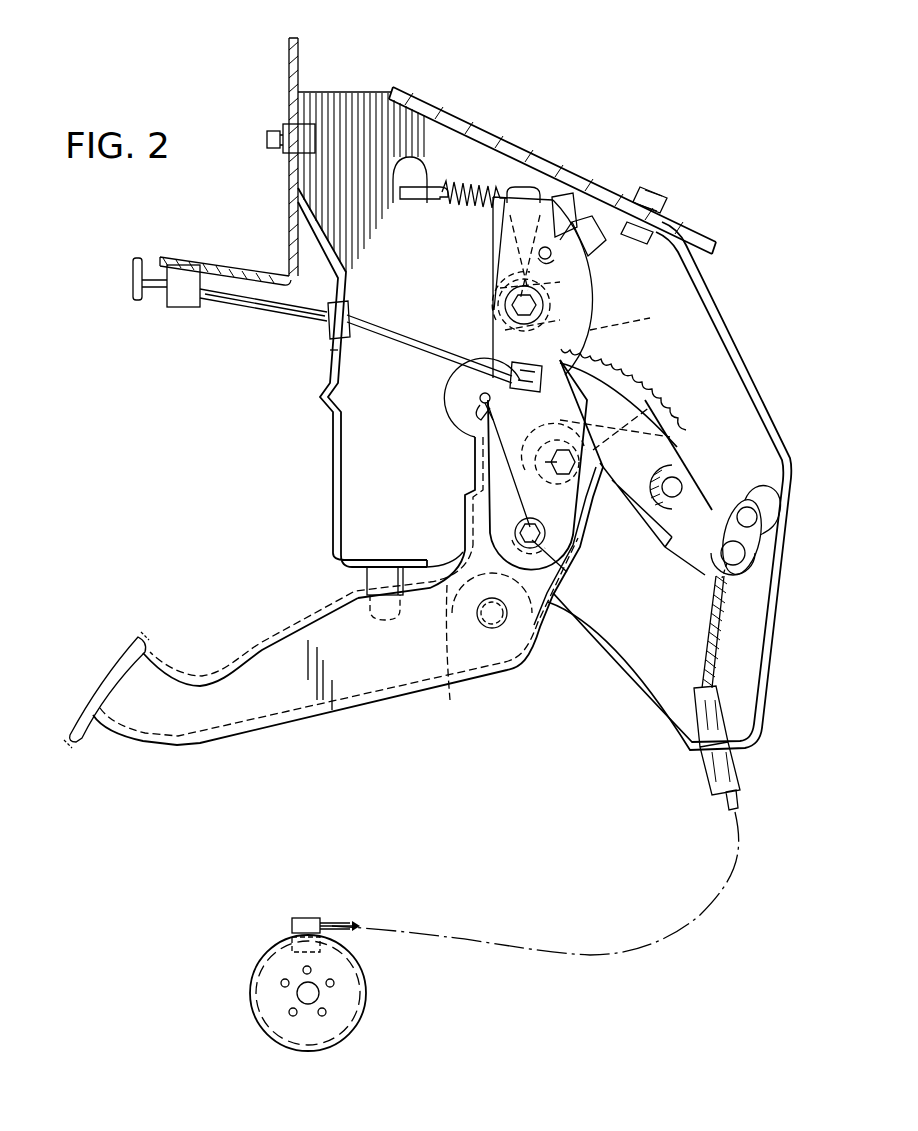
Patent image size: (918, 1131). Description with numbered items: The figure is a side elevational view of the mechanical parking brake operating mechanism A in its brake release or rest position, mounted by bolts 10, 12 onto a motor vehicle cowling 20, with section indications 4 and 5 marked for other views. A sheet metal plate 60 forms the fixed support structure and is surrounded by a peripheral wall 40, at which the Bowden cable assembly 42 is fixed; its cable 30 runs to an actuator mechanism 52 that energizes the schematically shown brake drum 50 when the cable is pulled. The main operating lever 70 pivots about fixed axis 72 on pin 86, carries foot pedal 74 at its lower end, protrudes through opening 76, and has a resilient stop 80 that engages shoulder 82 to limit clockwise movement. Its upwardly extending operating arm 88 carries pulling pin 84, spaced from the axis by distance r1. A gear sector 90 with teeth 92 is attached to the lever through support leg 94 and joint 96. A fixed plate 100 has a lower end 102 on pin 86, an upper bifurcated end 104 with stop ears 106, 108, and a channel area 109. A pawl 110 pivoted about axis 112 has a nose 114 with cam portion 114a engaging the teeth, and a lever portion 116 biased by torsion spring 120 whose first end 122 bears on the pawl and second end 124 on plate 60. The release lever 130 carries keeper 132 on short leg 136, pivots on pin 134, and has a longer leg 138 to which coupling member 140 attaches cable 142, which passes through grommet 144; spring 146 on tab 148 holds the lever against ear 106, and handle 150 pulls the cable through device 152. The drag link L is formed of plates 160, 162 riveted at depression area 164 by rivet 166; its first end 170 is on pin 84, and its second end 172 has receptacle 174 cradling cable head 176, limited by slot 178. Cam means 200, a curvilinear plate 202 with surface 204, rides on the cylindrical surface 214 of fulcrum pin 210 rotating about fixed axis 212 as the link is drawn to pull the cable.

The bolt 10 is at (275, 136).
The bolt 12 is at (660, 198).
The motor vehicle cowling 20 is at (291, 58).
The cable 30 is at (716, 654).
The peripheral wall 40 is at (453, 108).
The Bowden cable assembly 42 is at (734, 768).
The brake drum 50 is at (352, 1012).
The actuator mechanism 52 is at (307, 918).
The sheet metal plate 60 is at (375, 262).
The main operating lever 70 is at (333, 718).
The fixed axis 72 is at (574, 581).
The foot pedal 74 is at (114, 662).
The opening 76 is at (437, 557).
The resilient stop 80 is at (365, 580).
The abutment or shoulder 82 is at (337, 570).
The pulling pin 84 is at (480, 406).
The pin 86 is at (533, 548).
The operating arm 88 is at (474, 462).
The gear sector 90 is at (666, 394).
The teeth 92 is at (638, 378).
The support leg 94 is at (477, 644).
The rivet or welded joint 96 is at (504, 622).
The fixed plate 100 is at (472, 502).
The lower end 102 is at (463, 523).
The upper bifurcated end 104 is at (576, 228).
The stop ear 106 is at (517, 188).
The stop ear 108 is at (625, 192).
The transverse channel area 109 is at (515, 372).
The pawl 110 is at (497, 312).
The axis 112 is at (531, 306).
The nose 114 is at (480, 353).
The cam portion 114a is at (477, 356).
The lever portion 116 is at (563, 193).
The torsion spring 120 is at (500, 292).
The first end 122 is at (580, 214).
The second end 124 is at (610, 325).
The release lever 130 is at (593, 273).
The keeper 132 is at (537, 190).
The pin 134 is at (512, 258).
The short leg 136 is at (515, 231).
The long leg 138 is at (625, 352).
The cable coupling member 140 is at (578, 385).
The cable 142 is at (330, 355).
The grommet 144 is at (326, 322).
The spring 146 is at (462, 185).
The tab 148 is at (412, 157).
The handle 150 is at (136, 260).
The device 152 is at (180, 308).
The plate 160 is at (791, 468).
The plate 162 is at (673, 372).
The depression area 164 is at (673, 521).
The rivet 166 is at (679, 498).
The first end 170 is at (447, 391).
The second end 172 is at (708, 590).
The receptacle 174 is at (765, 497).
The cable head 176 is at (715, 572).
The elongated slot 178 is at (748, 593).
The cam means 200 is at (682, 462).
The curvilinear plate 202 is at (581, 558).
The curvilinear surface 204 is at (641, 566).
The fulcrum pin 210 is at (604, 487).
The axis 212 is at (495, 447).
The outer cylindrical surface 214 is at (678, 418).
The brake operating mechanism A is at (454, 100).
The drag link L is at (658, 452).
The distance r1 is at (527, 487).
The section line 4- 4 is at (497, 133).
The section line 5- 5 is at (585, 350).